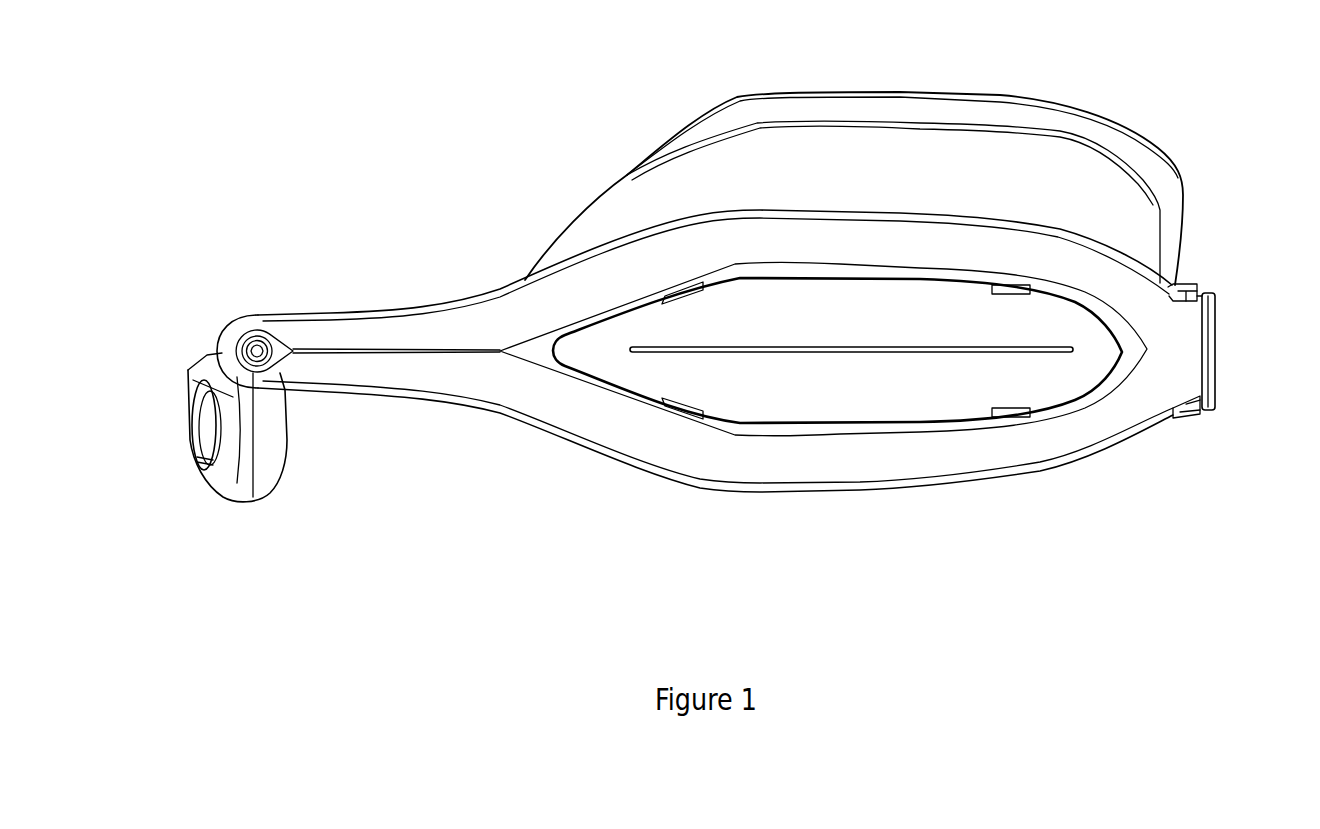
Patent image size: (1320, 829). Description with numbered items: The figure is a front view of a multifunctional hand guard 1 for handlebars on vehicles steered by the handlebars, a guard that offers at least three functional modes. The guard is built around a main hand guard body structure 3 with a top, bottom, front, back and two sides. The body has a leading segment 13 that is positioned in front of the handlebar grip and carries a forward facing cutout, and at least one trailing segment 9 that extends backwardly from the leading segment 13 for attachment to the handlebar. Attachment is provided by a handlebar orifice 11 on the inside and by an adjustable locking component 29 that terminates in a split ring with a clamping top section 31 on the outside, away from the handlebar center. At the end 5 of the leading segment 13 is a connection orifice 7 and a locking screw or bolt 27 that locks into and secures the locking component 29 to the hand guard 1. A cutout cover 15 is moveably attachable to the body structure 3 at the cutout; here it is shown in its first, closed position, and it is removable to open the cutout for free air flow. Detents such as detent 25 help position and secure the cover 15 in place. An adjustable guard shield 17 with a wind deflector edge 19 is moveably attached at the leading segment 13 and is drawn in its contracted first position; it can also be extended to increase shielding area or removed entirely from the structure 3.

The multifunctional hand guard 1 is at (392, 282).
The main hand guard body structure 3 is at (332, 325).
The end of leading segment 5 is at (228, 322).
The connection orifice 7 is at (249, 338).
The trailing segment 9 is at (1150, 310).
The handlebar orifice 11 is at (1215, 383).
The leading segment 13 is at (632, 397).
The cutout cover 15 is at (923, 410).
The adjustable guard shield 17 is at (990, 150).
The wind deflector edge 19 is at (931, 110).
The detent 25 is at (1010, 297).
The locking screw or bolt 27 is at (261, 333).
The adjustable locking component 29 is at (270, 470).
The clamping top section 31 is at (192, 432).